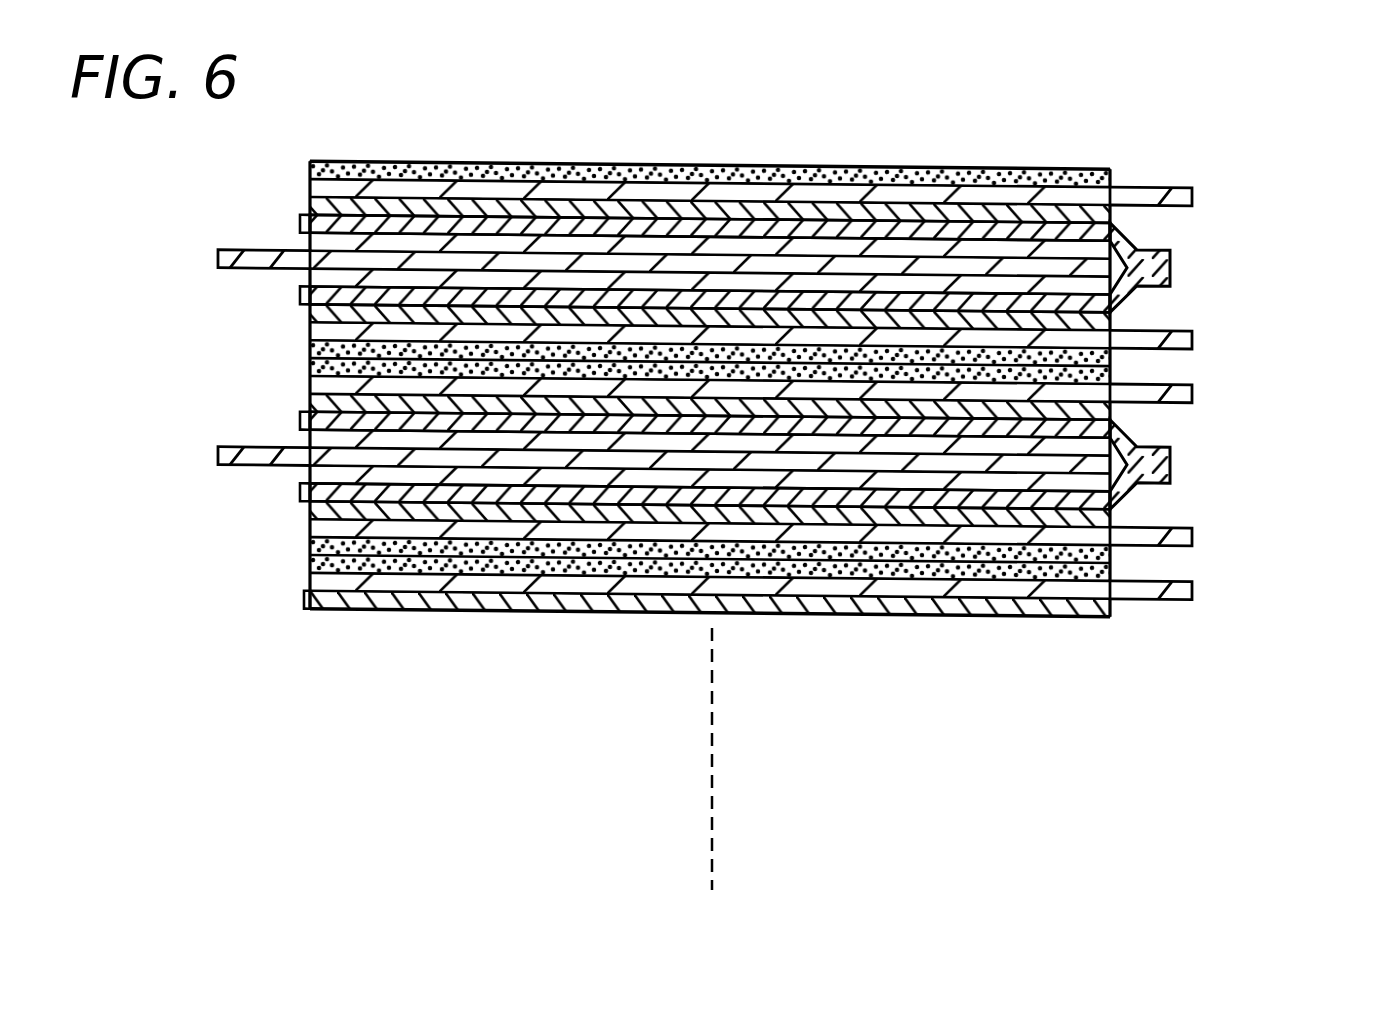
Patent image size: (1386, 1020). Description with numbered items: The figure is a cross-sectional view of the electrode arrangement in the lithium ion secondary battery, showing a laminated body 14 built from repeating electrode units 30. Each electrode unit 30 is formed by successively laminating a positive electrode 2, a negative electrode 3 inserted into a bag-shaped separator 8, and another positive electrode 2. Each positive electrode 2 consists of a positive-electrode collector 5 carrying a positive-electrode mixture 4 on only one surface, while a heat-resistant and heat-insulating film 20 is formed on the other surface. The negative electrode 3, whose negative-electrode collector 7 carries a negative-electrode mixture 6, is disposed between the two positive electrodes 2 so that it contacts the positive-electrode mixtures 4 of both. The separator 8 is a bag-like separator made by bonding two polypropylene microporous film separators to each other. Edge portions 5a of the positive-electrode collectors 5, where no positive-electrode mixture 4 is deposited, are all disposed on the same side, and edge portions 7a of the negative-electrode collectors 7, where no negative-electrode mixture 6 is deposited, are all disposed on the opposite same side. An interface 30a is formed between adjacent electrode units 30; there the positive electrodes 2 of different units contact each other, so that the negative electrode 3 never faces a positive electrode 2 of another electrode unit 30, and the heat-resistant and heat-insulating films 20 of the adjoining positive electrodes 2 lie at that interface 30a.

The positive electrode 2 is at (1260, 215).
The negative electrode 3 is at (1238, 287).
The positive-electrode mixture 4 is at (706, 207).
The positive-electrode collector 5 is at (765, 193).
The edge portion of positive-electrode collector 5a is at (1172, 195).
The negative-electrode mixture 6 is at (466, 278).
The negative-electrode collector 7 is at (518, 262).
The edge portion of negative-electrode collector 7a is at (244, 248).
The separator 8 is at (660, 225).
The laminated body 14 is at (1343, 388).
The heat-resistant and heat-insulating film 20 is at (838, 176).
The electrode unit 30 is at (1268, 173).
The interface 30a is at (300, 322).